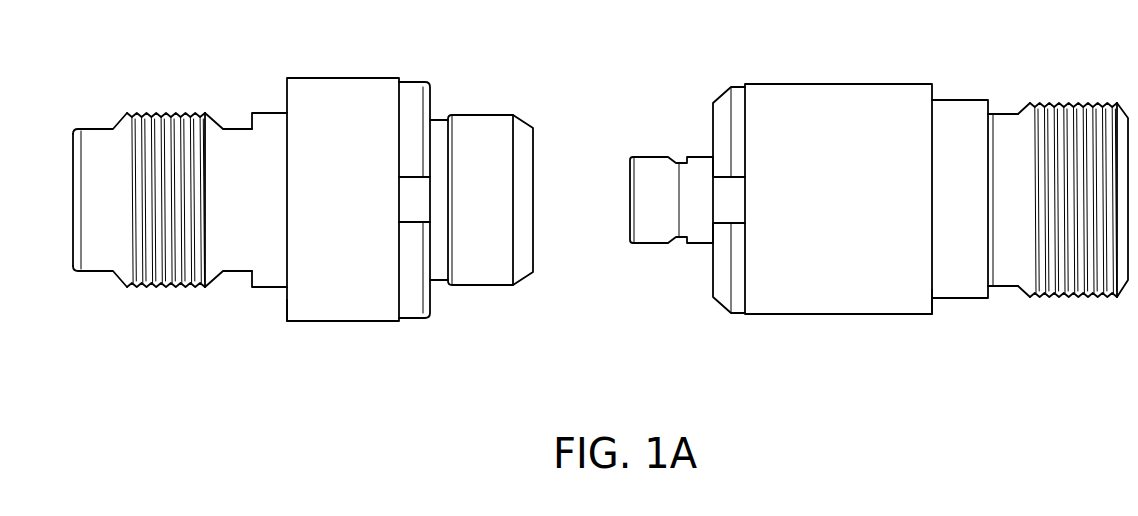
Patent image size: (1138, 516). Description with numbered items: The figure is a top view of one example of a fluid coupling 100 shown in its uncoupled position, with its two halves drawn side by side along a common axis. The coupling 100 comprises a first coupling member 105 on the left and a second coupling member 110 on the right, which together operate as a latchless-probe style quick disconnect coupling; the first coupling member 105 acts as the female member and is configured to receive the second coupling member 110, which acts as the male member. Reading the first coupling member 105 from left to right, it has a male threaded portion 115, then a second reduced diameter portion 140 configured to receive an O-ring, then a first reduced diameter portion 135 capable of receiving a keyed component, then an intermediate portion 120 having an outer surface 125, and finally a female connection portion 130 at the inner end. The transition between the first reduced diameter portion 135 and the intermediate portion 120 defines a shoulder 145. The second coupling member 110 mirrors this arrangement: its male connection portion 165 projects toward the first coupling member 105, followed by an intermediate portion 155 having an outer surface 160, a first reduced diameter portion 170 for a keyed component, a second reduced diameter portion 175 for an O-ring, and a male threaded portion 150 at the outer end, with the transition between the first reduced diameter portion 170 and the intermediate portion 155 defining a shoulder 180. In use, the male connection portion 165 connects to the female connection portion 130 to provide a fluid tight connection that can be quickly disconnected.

The fluid coupling 100 is at (1137, 35).
The first coupling member 105 is at (72, 394).
The second coupling member 110 is at (627, 394).
The male threaded portion 115 is at (168, 105).
The intermediate portion 120 is at (345, 332).
The outer surface 125 is at (363, 308).
The female connection portion 130 is at (480, 104).
The first reduced diameter portion 135 is at (255, 298).
The second reduced diameter portion 140 is at (232, 120).
The shoulder 145 is at (287, 322).
The male threaded portion 150 is at (1078, 314).
The intermediate portion 155 is at (848, 328).
The outer surface 160 is at (797, 303).
The male connection portion 165 is at (697, 259).
The first reduced diameter portion 170 is at (974, 310).
The second reduced diameter portion 175 is at (1009, 105).
The shoulder 180 is at (934, 310).